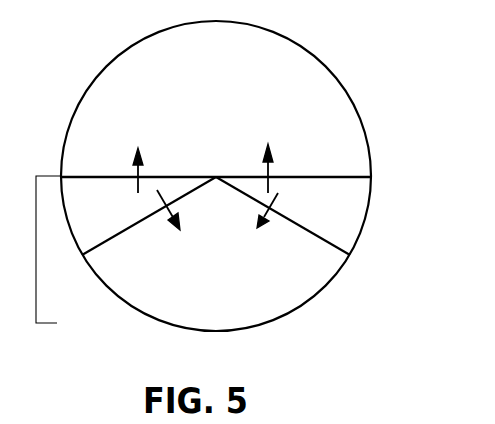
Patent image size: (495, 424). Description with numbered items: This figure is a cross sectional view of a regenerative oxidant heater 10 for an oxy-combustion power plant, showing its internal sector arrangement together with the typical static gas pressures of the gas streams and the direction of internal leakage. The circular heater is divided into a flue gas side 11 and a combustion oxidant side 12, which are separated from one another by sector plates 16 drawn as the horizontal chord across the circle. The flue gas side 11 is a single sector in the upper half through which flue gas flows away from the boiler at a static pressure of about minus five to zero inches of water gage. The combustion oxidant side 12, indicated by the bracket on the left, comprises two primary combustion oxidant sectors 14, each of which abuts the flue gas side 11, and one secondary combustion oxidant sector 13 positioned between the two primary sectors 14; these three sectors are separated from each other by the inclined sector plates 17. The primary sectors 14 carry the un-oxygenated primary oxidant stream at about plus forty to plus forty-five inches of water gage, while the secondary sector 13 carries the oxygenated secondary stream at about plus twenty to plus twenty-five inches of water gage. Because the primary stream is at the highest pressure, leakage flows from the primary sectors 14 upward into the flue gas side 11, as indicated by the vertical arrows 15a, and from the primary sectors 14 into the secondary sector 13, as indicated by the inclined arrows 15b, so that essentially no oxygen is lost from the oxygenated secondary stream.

The regenerative oxidant heater 10 is at (338, 77).
The flue gas side 11 is at (213, 84).
The combustion oxidant side 12 is at (36, 252).
The secondary combustion oxidant sector 13 is at (220, 281).
The primary combustion oxidant sector 14 is at (216, 205).
The leakage arrows from primary stream to flue gas stream 15a is at (135, 170).
The leakage arrow from primary stream to secondary stream 15b is at (273, 205).
The sector plates 16 is at (165, 176).
The sector plates 17 is at (130, 226).